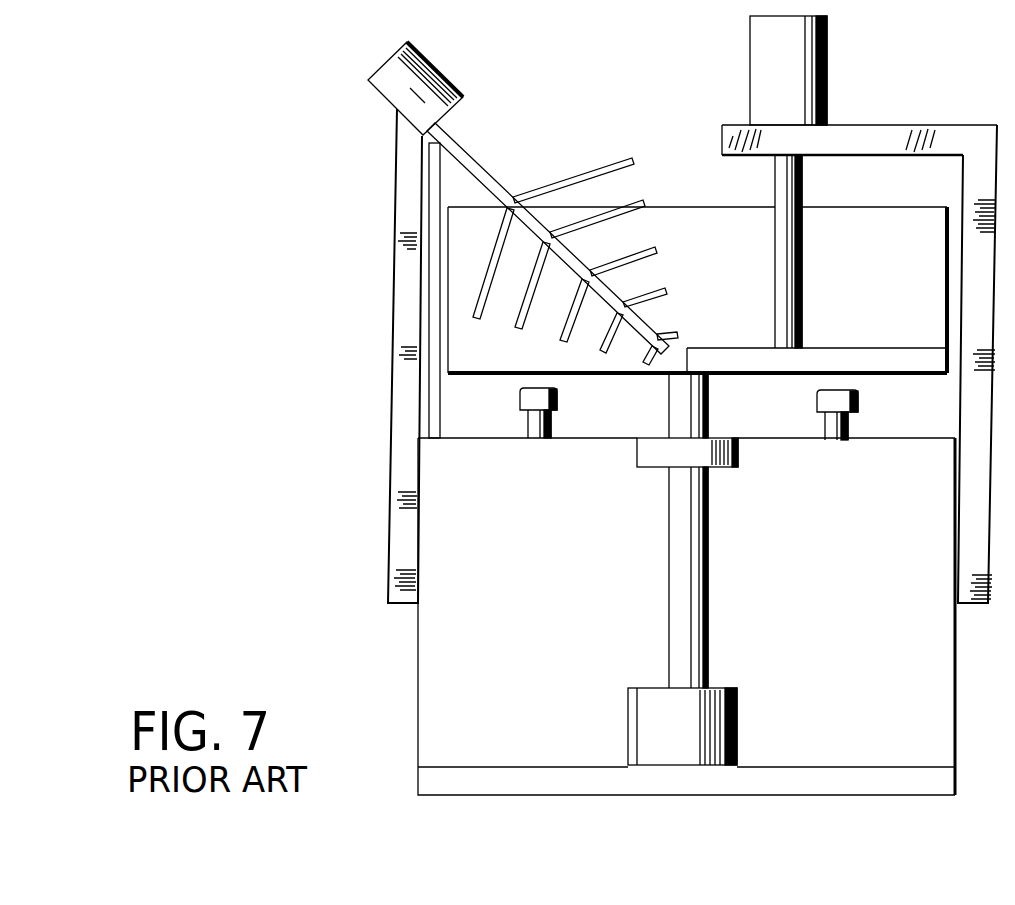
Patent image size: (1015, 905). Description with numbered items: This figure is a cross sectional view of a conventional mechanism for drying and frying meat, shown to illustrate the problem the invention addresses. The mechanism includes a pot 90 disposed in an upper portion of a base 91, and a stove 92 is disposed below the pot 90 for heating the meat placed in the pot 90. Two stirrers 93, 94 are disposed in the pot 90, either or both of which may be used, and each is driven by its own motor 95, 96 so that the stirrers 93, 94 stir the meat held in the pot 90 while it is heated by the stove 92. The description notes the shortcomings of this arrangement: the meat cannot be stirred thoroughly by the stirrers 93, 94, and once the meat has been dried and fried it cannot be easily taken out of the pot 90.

The pot 90 is at (947, 253).
The base 91 is at (945, 677).
The stove 92 is at (850, 425).
The stirrer 93 is at (885, 360).
The stirrer 94 is at (603, 166).
The motor 95 is at (827, 67).
The motor 96 is at (448, 82).